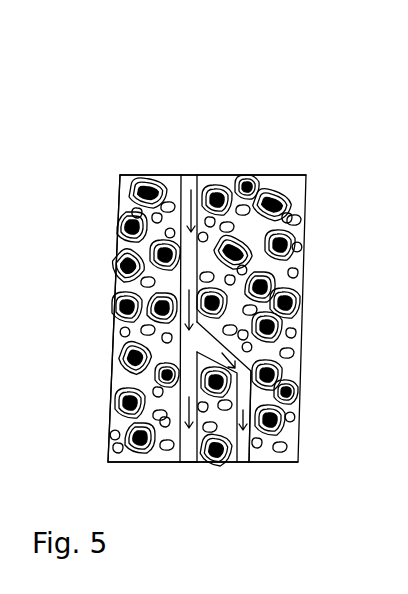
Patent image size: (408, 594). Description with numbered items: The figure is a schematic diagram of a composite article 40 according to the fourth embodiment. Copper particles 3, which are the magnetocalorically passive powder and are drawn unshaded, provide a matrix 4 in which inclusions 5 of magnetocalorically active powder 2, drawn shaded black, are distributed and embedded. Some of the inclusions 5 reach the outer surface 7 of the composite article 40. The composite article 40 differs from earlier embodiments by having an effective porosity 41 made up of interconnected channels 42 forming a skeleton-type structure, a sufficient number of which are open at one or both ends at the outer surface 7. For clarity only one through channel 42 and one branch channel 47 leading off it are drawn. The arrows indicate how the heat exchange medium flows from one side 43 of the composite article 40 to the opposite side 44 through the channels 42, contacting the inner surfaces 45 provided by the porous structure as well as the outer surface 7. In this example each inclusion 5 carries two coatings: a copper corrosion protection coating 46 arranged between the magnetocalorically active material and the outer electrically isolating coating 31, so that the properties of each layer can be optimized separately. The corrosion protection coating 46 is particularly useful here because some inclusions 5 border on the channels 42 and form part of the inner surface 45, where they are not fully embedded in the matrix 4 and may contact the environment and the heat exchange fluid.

The composite article 40 is at (329, 82).
The effective porosity 41 is at (252, 452).
The channel 42 is at (189, 181).
The one side 43 is at (162, 164).
The opposite side 44 is at (151, 467).
The inner surface 45 is at (185, 463).
The corrosion protection coating 46 is at (114, 270).
The branch channel 47 is at (240, 462).
The magnetocalorically active powder 2 is at (283, 193).
The copper particles 3 is at (302, 216).
The electrically isolating coating 31 is at (298, 255).
The matrix 4 is at (295, 333).
The inclusion 5 is at (122, 310).
The outer surface 7 is at (297, 418).